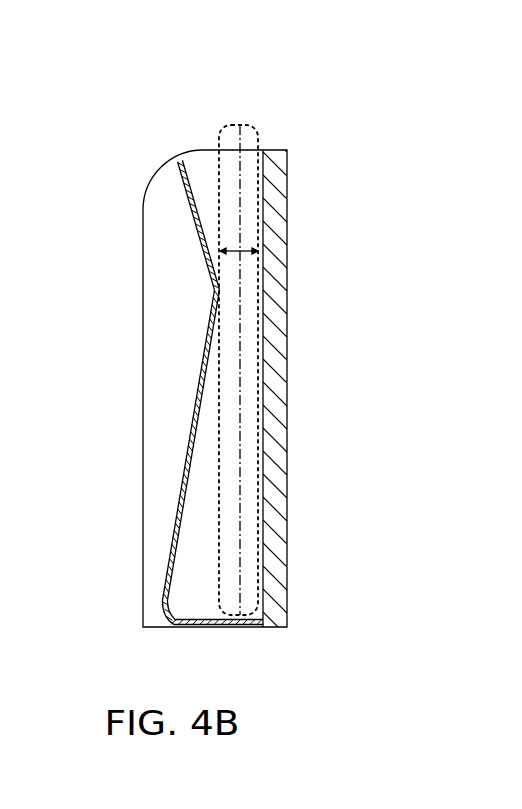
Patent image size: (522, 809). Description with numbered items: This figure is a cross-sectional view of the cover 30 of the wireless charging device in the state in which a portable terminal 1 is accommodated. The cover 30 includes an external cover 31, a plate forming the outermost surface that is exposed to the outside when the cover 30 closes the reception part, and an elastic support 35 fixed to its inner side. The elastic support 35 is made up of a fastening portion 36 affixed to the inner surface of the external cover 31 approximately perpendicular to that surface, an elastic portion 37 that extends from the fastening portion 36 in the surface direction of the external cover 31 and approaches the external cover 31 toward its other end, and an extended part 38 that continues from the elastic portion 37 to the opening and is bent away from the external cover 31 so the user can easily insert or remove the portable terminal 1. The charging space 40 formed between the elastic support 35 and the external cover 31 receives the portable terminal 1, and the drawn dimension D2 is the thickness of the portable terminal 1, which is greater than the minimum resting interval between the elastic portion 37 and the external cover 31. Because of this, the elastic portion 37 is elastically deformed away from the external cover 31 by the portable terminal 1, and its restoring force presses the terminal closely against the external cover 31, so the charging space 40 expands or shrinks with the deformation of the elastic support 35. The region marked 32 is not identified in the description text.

The cover 30 is at (235, 52).
The external cover 31 is at (277, 185).
The accommodation space 32 is at (203, 182).
The portable terminal 1 is at (260, 143).
The thickness D2 is at (252, 247).
The charging space 40 is at (245, 425).
The elastic support 35 is at (132, 416).
The fastening portion 36 is at (160, 636).
The elastic portion 37 is at (187, 467).
The extended part 38 is at (212, 236).